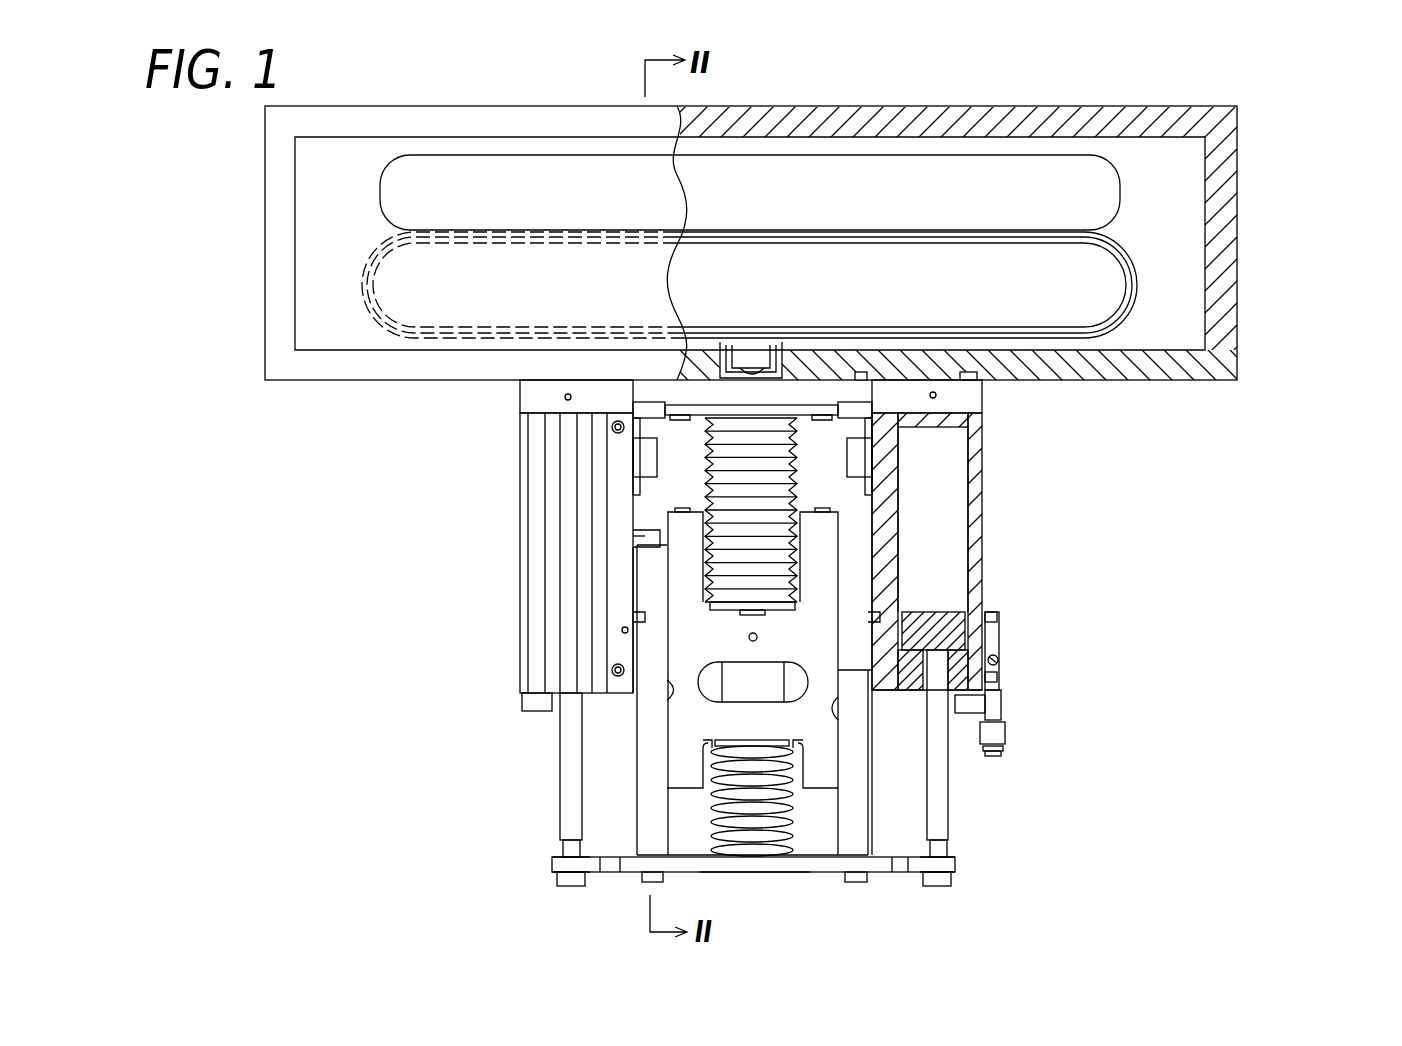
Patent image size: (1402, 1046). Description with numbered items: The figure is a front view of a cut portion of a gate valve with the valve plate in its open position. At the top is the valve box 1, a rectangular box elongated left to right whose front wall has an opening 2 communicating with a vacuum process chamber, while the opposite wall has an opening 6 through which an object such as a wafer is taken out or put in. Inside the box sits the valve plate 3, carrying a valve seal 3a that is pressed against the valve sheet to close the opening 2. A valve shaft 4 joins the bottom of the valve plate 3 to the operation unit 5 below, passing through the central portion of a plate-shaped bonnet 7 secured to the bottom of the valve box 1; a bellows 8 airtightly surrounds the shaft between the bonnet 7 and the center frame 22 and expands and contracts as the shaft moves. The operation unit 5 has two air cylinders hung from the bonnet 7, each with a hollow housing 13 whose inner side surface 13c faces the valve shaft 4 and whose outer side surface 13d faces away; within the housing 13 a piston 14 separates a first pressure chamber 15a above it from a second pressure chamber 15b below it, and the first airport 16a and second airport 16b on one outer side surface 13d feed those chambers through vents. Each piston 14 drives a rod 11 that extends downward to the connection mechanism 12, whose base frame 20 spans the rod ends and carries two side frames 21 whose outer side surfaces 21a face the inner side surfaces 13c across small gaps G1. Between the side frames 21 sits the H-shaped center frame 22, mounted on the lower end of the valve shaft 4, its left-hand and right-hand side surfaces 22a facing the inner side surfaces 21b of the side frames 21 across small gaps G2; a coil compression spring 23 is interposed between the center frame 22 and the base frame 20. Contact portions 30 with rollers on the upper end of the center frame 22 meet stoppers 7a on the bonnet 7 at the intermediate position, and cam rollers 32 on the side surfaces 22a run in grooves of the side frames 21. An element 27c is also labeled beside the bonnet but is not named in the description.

The valve box 1 is at (1222, 130).
The opening 2 is at (490, 185).
The valve plate 3 is at (885, 290).
The valve seal 3a is at (1137, 258).
The valve shaft 4 is at (760, 340).
The operation unit 5 is at (1140, 513).
The opening 6 is at (992, 185).
The bonnet 7 is at (535, 393).
The stoppers 7a is at (653, 440).
The bellows 8 is at (757, 552).
The rods 11 is at (575, 797).
The connection mechanism 12 is at (752, 873).
The housing 13 is at (523, 482).
The inner side surface 13c is at (633, 602).
The outer side surface 13d is at (983, 565).
The piston 14 is at (937, 628).
The first pressure chamber 15a is at (940, 467).
The second pressure chamber 15b is at (997, 678).
The first airport 16a is at (992, 733).
The second airport 16b is at (1047, 748).
The base frame 20 is at (627, 862).
The side frames 21 is at (650, 650).
The outer side surfaces 21a is at (633, 615).
The inner side surfaces 21b is at (660, 700).
The center frame 22 is at (685, 770).
The left-hand and right-hand side surfaces 22a is at (667, 728).
The compression spring 23 is at (767, 830).
The bracket 27c is at (647, 455).
The contact portions 30 is at (680, 508).
The cam rollers 32 is at (633, 538).
The small gaps G1 is at (633, 578).
The small gaps G2 is at (673, 622).